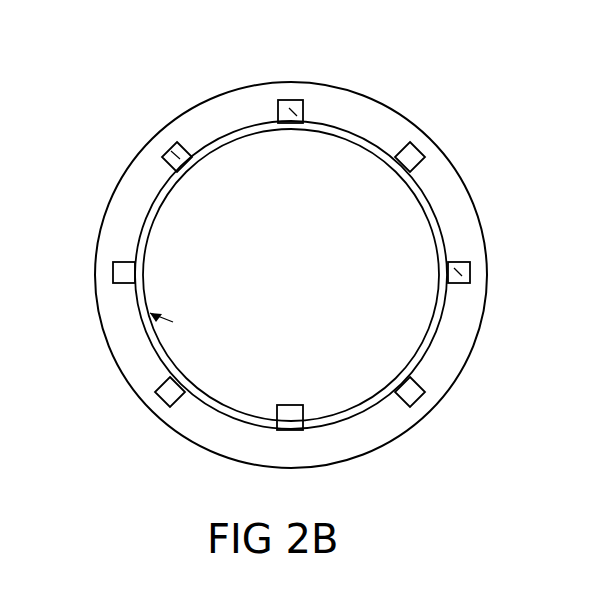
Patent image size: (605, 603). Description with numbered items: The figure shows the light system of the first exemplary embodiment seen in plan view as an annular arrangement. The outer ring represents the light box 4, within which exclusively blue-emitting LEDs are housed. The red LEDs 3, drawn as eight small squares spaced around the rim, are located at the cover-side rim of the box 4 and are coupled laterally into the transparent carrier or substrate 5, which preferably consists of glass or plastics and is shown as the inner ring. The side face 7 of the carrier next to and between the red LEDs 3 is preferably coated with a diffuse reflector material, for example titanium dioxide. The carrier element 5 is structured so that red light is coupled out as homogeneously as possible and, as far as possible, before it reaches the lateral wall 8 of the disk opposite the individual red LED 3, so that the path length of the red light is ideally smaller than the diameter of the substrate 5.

The red LEDs 3 is at (297, 113).
The light box 4 is at (128, 207).
The carrier or substrate 5 is at (412, 228).
The side face 7 is at (222, 107).
The lateral wall 8 is at (160, 318).